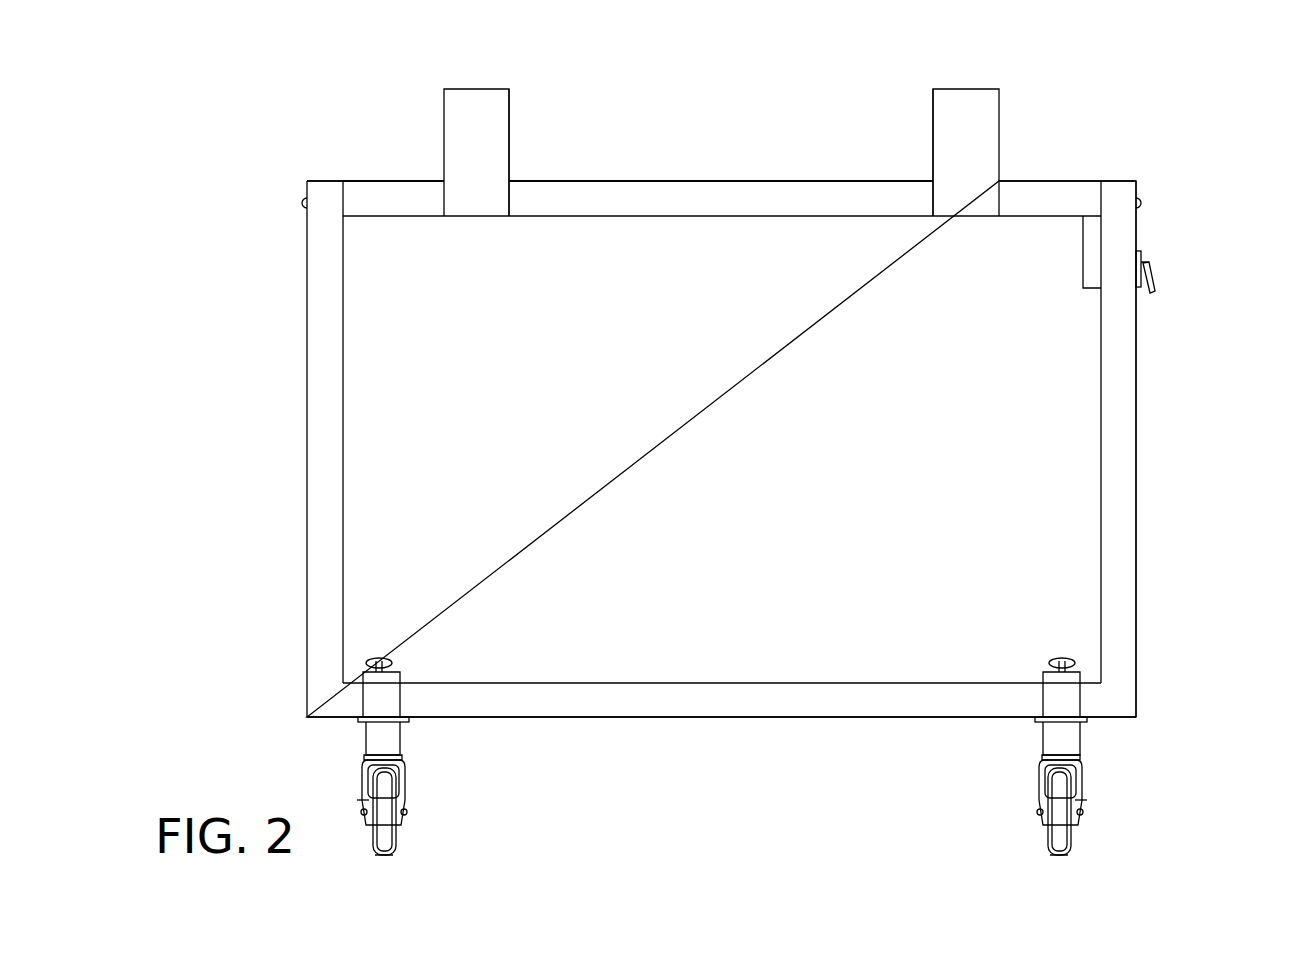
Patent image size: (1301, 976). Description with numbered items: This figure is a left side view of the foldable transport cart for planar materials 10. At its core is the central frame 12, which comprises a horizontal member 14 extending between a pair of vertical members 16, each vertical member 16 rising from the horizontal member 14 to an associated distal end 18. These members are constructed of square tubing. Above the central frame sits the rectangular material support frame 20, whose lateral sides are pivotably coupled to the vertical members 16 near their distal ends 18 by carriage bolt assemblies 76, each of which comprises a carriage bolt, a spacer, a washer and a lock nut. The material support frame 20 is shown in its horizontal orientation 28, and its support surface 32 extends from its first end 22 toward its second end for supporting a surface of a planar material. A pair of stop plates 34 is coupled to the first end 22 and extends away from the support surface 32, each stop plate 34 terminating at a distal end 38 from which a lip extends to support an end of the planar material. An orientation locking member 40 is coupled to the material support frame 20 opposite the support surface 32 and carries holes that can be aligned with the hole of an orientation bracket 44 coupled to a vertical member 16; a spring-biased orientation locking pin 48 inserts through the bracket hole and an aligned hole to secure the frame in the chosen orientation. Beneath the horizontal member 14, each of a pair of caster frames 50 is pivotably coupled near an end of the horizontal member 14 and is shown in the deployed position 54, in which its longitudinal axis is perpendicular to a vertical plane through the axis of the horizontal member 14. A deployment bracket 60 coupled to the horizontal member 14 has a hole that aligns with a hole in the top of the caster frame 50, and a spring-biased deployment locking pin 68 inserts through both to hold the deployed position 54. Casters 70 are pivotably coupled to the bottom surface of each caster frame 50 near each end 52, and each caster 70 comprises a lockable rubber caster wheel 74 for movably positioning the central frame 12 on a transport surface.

The foldable transport cart for planar materials 10 is at (1126, 95).
The central frame 12 is at (760, 402).
The horizontal member 14 is at (640, 692).
The vertical member 16 is at (328, 337).
The distal end 18 is at (327, 181).
The material support frame 20 is at (582, 205).
The first end 22 is at (710, 189).
The horizontal orientation 28 is at (662, 96).
The support surface 32 is at (397, 181).
The stop plate 34 is at (505, 107).
The distal end 38 is at (466, 89).
The orientation locking member 40 is at (1082, 250).
The orientation bracket 44 is at (1142, 264).
The orientation locking pin 48 is at (1152, 283).
The caster frame 50 is at (396, 735).
The end 52 is at (371, 728).
The deployed position 54 is at (387, 880).
The deployment bracket 60 is at (394, 692).
The deployment locking pin 68 is at (380, 660).
The caster 70 is at (428, 809).
The caster wheel 74 is at (380, 836).
The carriage bolt assembly 76 is at (298, 203).